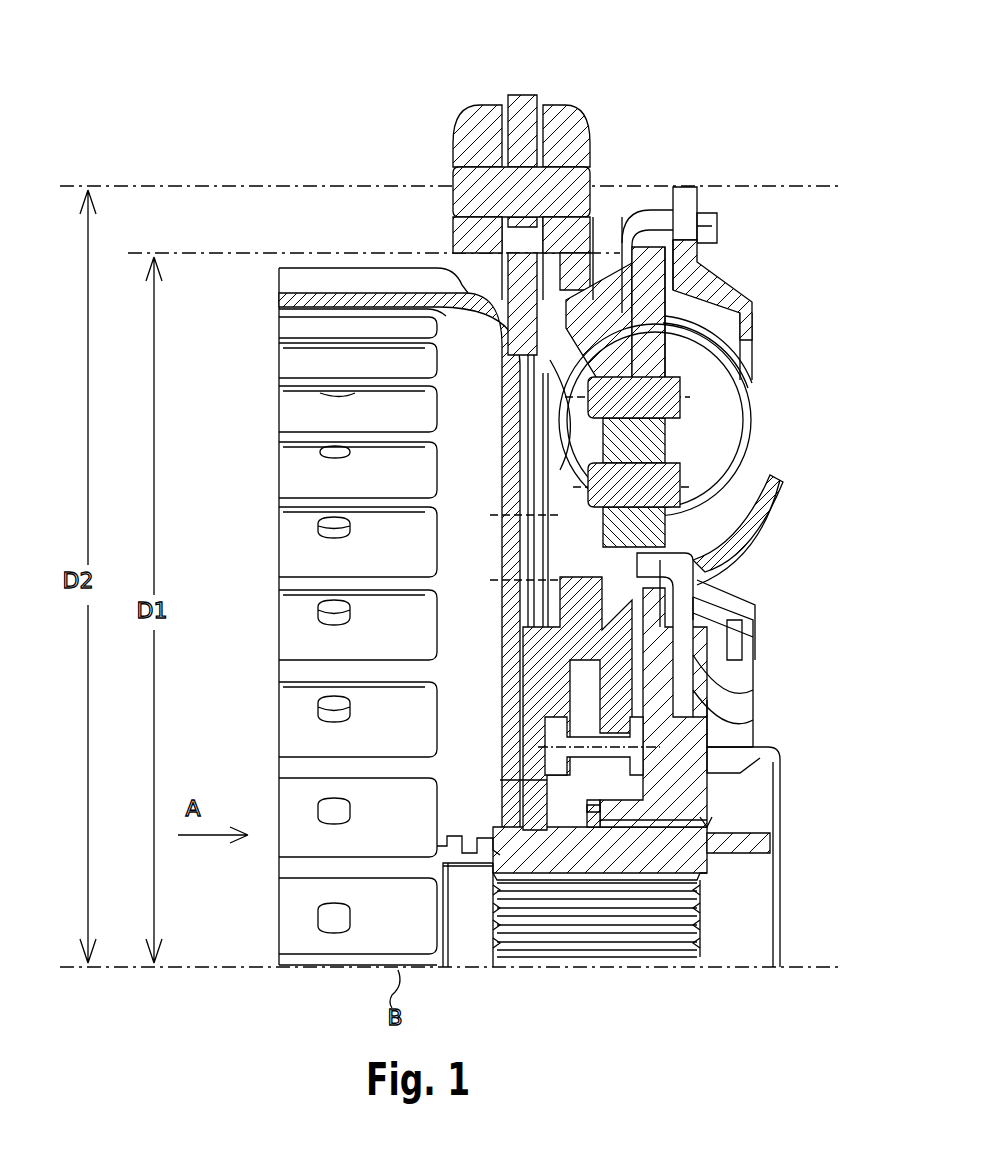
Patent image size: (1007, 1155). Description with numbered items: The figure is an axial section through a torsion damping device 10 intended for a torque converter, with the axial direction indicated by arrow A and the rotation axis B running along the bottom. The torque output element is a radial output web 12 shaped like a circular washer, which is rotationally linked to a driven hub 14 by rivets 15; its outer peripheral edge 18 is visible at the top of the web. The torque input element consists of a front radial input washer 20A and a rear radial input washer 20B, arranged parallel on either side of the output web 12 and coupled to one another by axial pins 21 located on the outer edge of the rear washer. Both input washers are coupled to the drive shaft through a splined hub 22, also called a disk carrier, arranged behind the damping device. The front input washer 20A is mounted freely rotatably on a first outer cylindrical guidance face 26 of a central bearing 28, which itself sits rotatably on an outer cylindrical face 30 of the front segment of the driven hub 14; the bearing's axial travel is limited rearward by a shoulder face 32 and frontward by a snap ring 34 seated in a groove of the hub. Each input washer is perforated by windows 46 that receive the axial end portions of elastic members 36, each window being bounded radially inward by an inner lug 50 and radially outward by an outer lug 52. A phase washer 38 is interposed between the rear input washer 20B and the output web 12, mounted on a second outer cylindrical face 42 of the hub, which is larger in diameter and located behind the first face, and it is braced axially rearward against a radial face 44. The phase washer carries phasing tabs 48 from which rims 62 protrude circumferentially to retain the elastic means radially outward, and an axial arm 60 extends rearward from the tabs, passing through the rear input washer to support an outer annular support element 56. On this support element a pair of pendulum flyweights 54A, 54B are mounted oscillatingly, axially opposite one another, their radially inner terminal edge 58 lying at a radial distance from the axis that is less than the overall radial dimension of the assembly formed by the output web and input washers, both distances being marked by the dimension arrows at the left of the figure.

The torsion damping device 10 is at (345, 125).
The output web 12 is at (620, 665).
The driven hub 14 is at (558, 830).
The rivets 15 is at (552, 750).
The outer peripheral edge 18 is at (700, 580).
The front radial input washer 20A is at (698, 266).
The rear radial input washer 20B is at (605, 258).
The axial pins 21 is at (662, 205).
The splined hub 22 is at (320, 410).
The first outer cylindrical guidance face 26 is at (730, 700).
The central bearing 28 is at (682, 750).
The outer cylindrical face 30 is at (630, 800).
The shoulder face 32 is at (595, 815).
The snap ring 34 is at (720, 830).
The elastic members 36 is at (715, 432).
The phase washer 38 is at (600, 530).
The second outer cylindrical face 42 is at (630, 605).
The radial face 44 is at (560, 565).
The windows 46 is at (440, 312).
The phasing tabs 48 is at (560, 440).
The inner lug 50 is at (780, 490).
The outer lug 52 is at (611, 262).
The pendulum flyweight 54A is at (578, 125).
The pendulum flyweight 54B is at (488, 125).
The support element 56 is at (522, 120).
The radially inner terminal edge 58 is at (505, 285).
The axial arm 60 is at (730, 382).
The rims 62 is at (650, 303).